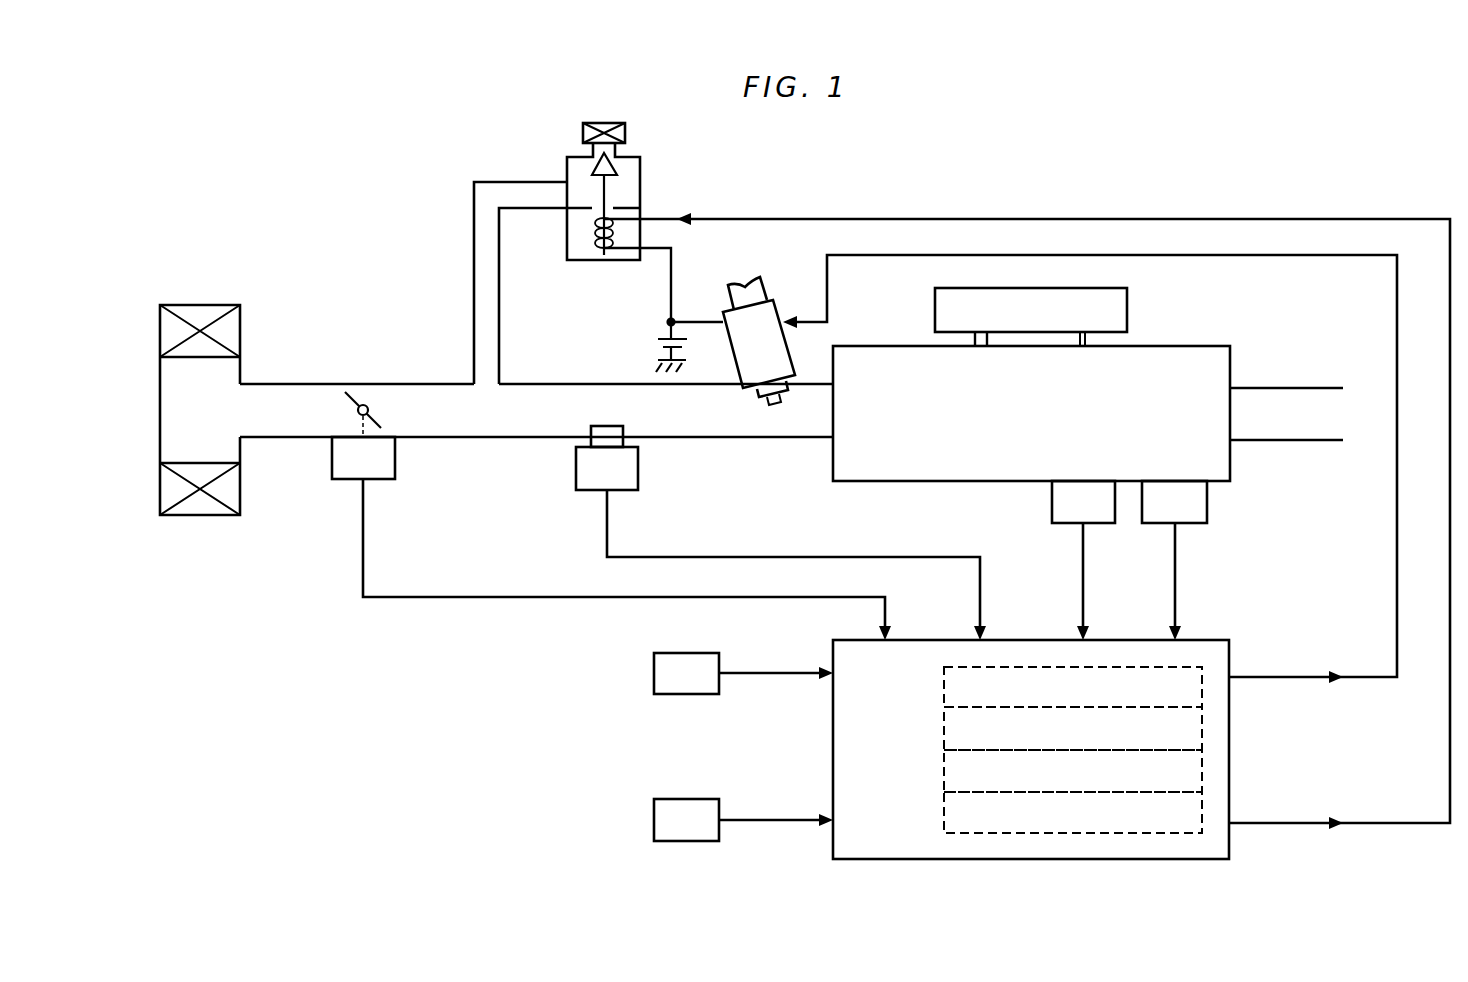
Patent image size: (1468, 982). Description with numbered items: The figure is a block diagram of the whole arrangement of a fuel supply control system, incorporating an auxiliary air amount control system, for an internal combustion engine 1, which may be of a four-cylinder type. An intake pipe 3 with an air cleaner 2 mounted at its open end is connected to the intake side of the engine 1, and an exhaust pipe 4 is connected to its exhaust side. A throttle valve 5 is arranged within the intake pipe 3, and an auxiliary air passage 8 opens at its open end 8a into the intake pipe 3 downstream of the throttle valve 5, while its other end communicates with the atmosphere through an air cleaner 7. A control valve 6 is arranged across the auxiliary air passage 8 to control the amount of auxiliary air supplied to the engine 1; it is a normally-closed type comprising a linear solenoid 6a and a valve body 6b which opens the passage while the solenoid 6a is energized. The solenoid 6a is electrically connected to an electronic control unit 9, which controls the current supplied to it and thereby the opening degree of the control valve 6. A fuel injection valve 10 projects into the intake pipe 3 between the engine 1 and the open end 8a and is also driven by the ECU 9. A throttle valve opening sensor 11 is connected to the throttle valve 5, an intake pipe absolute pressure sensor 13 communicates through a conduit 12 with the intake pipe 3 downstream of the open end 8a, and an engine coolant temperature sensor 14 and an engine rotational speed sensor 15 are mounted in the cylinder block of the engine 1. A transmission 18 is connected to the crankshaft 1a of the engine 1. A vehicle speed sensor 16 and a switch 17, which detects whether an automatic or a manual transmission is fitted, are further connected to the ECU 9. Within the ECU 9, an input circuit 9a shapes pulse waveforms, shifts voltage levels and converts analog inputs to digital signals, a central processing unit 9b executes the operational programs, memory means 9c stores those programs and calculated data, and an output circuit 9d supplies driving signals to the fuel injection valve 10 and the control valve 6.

The internal combustion engine 1 is at (1183, 345).
The crankshaft 1a is at (987, 338).
The air cleaner 2 is at (177, 304).
The intake pipe 3 is at (257, 393).
The exhaust pipe 4 is at (1280, 389).
The throttle valve 5 is at (353, 397).
The control valve 6 is at (650, 158).
The linear solenoid 6a is at (595, 232).
The valve body 6b is at (594, 165).
The air cleaner 7 is at (626, 133).
The auxiliary air passage 8 is at (488, 308).
The open end 8a is at (486, 383).
The electronic control unit 9 is at (1200, 640).
The input circuit 9a is at (1203, 673).
The central processing unit 9b is at (1205, 732).
The memory means 9c is at (1203, 782).
The output circuit 9d is at (1203, 826).
The fuel injection valve 10 is at (783, 308).
The throttle valve opening sensor 11 is at (397, 452).
The conduit 12 is at (623, 443).
The intake pipe absolute pressure sensor 13 is at (640, 477).
The engine coolant temperature sensor 14 is at (1092, 524).
The engine rotational speed sensor 15 is at (1188, 524).
The vehicle speed sensor 16 is at (703, 653).
The switch 17 is at (694, 799).
The transmission 18 is at (1128, 313).